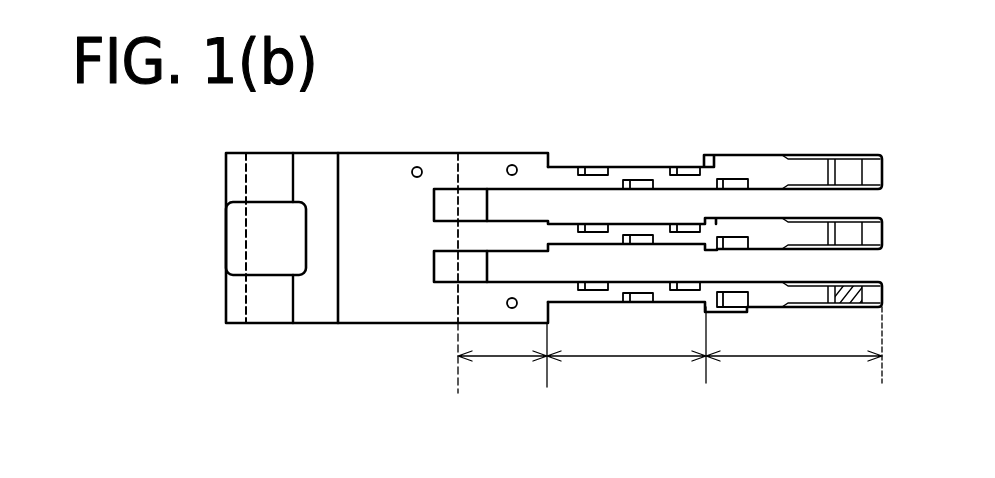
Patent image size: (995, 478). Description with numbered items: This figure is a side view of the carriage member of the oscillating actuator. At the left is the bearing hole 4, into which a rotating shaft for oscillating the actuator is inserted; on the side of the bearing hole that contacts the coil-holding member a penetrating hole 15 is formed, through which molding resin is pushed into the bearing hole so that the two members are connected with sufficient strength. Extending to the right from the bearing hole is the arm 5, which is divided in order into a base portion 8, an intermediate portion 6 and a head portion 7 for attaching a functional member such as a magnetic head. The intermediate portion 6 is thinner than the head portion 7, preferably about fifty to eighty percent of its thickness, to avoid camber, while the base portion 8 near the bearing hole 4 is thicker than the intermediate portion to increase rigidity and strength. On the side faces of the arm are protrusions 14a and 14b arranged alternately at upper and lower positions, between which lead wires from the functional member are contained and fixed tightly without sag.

The bearing hole 4 is at (390, 292).
The arm 5 is at (882, 393).
The intermediate portion 6 is at (626, 355).
The head portion 7 is at (794, 355).
The base portion 8 is at (502, 363).
The protrusion 14a is at (590, 168).
The protrusion 14b is at (638, 180).
The penetrating hole 15 is at (272, 235).